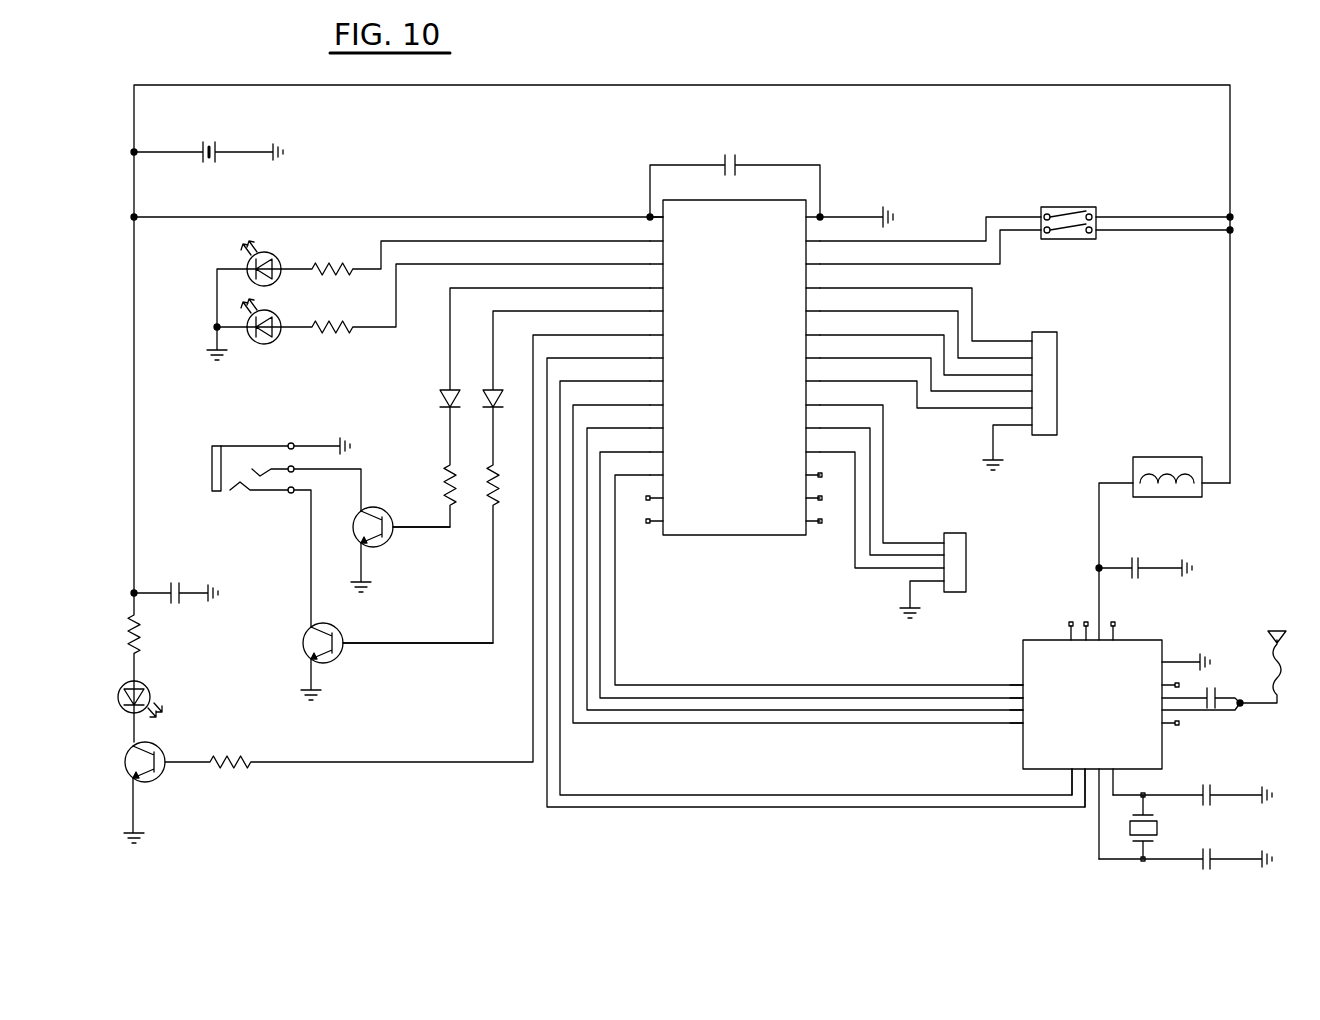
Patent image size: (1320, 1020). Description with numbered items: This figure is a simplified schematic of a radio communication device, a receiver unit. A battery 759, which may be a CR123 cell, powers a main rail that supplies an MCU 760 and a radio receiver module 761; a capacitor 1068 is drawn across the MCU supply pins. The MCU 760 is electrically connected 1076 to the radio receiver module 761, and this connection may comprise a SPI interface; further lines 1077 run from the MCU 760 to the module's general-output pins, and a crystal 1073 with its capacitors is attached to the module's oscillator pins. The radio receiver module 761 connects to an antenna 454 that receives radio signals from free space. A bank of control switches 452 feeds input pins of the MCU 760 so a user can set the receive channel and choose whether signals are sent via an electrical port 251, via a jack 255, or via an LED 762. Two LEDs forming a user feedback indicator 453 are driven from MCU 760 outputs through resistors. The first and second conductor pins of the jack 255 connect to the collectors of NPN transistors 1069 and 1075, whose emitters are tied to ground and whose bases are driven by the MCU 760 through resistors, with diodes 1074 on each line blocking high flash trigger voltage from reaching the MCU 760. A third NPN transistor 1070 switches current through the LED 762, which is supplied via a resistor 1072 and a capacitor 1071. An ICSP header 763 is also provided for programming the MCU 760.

The battery 759 is at (218, 163).
The capacitor 1068 is at (735, 177).
The MCU 760 is at (734, 382).
The user feedback indicator 453 is at (428, 300).
The diodes 1074 is at (496, 465).
The jack 255 is at (286, 524).
The NPN transistor 1069 is at (400, 549).
The NPN transistor 1075 is at (397, 661).
The capacitor 1071 is at (174, 582).
The resistor 1072 is at (160, 637).
The LED 762 is at (143, 707).
The NPN transistor 1070 is at (387, 589).
The electrical connection 1076 is at (798, 564).
The GDO wires 1077 is at (816, 582).
The control switches 452 is at (1025, 224).
The electrical port 251 is at (953, 379).
The ICSP connector 763 is at (906, 511).
The radio receiver module 761 is at (1125, 658).
The antenna 454 is at (1261, 679).
The crystal 1073 is at (1185, 827).